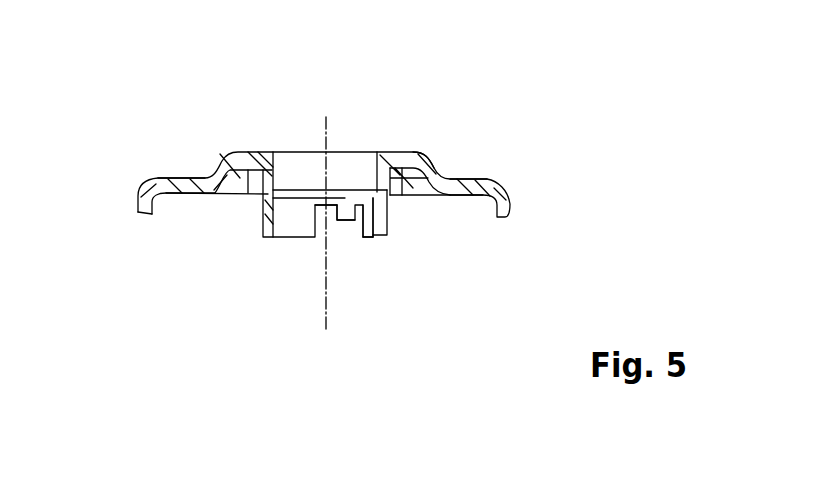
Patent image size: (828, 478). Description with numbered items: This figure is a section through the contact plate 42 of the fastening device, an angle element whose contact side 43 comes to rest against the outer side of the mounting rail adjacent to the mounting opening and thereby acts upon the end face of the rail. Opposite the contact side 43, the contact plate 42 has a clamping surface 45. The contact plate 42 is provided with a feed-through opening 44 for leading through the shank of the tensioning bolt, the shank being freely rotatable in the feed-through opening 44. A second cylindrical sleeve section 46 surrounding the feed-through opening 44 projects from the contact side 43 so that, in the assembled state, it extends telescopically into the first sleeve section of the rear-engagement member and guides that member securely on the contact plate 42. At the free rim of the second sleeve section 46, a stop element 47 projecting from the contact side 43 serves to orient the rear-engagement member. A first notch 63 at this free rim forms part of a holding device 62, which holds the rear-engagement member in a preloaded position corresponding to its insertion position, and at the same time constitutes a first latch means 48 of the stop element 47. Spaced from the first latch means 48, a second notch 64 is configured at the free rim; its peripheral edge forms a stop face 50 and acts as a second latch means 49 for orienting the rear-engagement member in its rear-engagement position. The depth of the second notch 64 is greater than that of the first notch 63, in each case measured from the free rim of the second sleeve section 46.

The contact plate 42 is at (498, 132).
The contact side 43 is at (193, 197).
The feed-through opening 44 is at (354, 155).
The clamping surface 45 is at (405, 155).
The second cylindrical sleeve section 46 is at (388, 207).
The stop element 47 is at (374, 258).
The first latch means 48 is at (318, 213).
The second latch means 49 is at (369, 244).
The stop face 50 is at (362, 218).
The holding device 62 is at (315, 255).
The first notch 63 is at (328, 208).
The second notch 64 is at (354, 207).